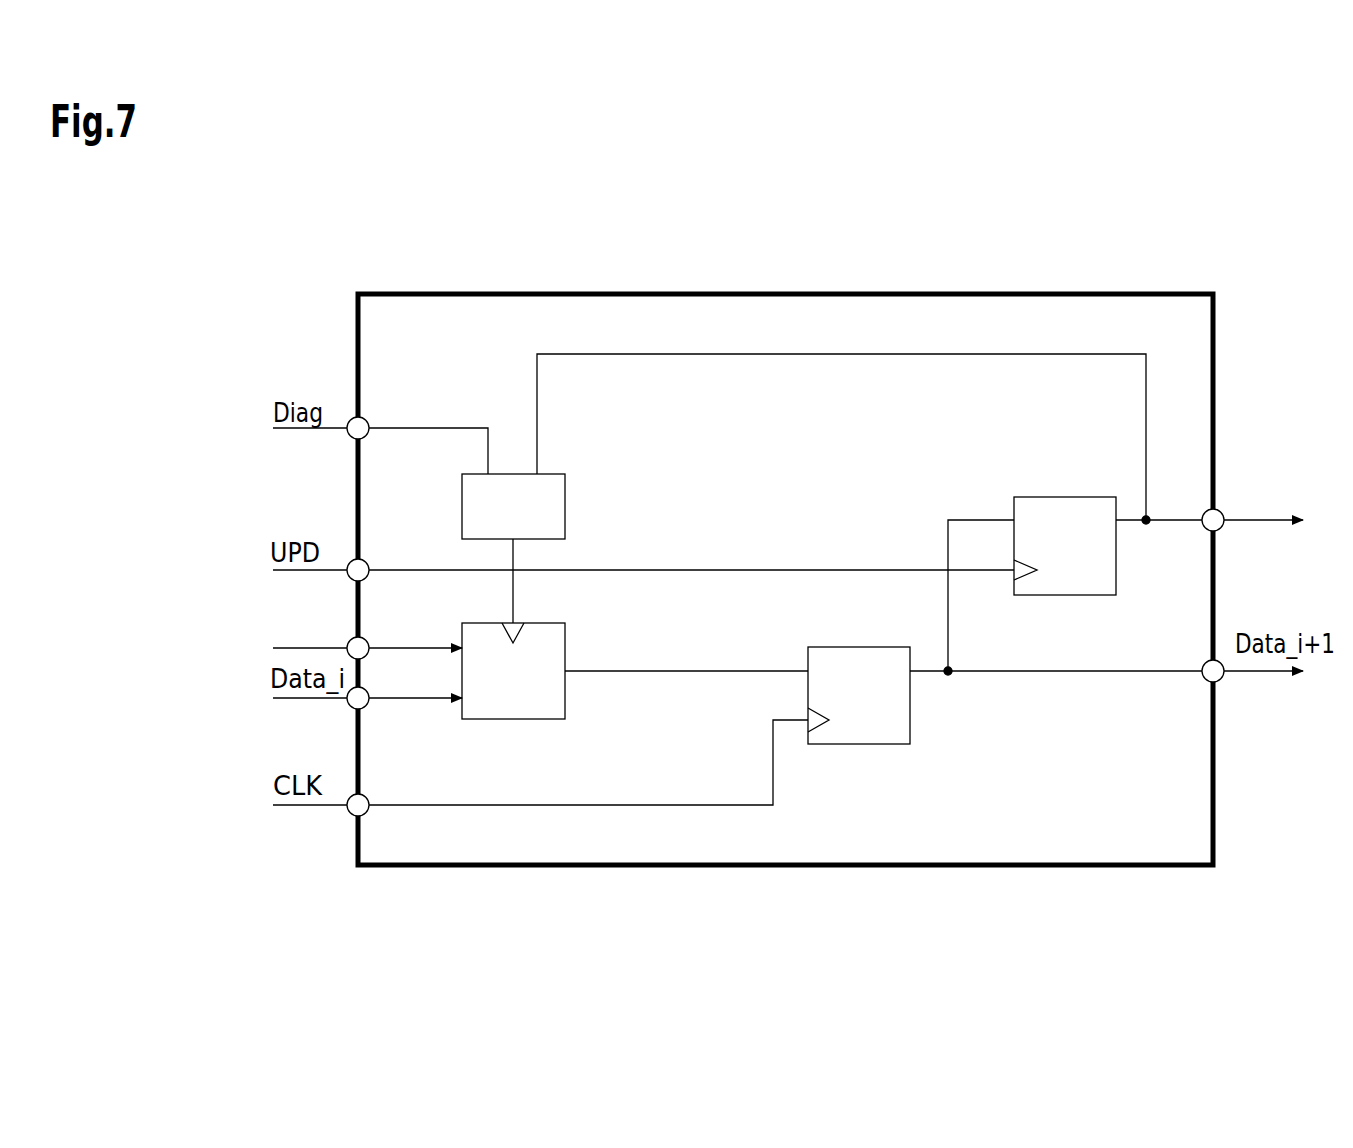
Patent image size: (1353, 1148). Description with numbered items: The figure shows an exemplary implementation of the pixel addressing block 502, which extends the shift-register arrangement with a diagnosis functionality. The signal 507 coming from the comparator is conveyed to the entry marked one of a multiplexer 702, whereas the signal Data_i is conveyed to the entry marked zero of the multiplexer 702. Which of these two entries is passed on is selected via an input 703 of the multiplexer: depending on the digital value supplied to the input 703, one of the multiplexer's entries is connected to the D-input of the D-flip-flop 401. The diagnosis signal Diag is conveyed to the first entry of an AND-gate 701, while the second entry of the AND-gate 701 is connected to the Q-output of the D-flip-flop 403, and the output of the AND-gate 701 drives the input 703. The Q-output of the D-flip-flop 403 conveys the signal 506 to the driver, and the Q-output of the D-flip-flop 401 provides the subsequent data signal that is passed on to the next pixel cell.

The pixel addressing block 502 is at (357, 319).
The AND-gate 701 is at (565, 509).
The multiplexer 702 is at (565, 710).
The input of the multiplexer 703 is at (522, 649).
The D-flip-flop 401 is at (910, 722).
The D-flip-flop 403 is at (1067, 497).
The signal 506 is at (1252, 508).
The signal from the comparator 507 is at (366, 636).